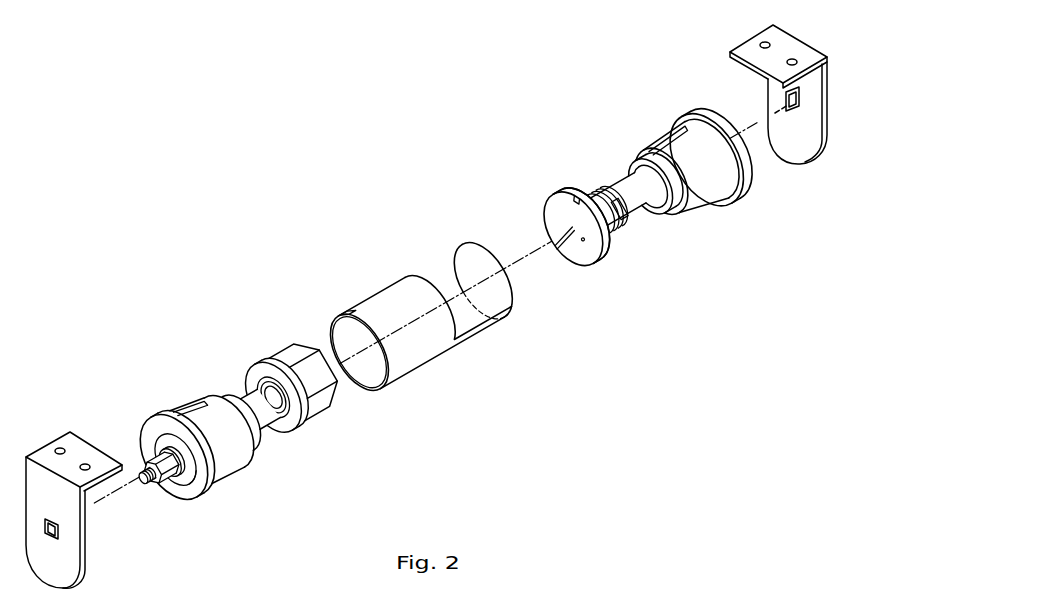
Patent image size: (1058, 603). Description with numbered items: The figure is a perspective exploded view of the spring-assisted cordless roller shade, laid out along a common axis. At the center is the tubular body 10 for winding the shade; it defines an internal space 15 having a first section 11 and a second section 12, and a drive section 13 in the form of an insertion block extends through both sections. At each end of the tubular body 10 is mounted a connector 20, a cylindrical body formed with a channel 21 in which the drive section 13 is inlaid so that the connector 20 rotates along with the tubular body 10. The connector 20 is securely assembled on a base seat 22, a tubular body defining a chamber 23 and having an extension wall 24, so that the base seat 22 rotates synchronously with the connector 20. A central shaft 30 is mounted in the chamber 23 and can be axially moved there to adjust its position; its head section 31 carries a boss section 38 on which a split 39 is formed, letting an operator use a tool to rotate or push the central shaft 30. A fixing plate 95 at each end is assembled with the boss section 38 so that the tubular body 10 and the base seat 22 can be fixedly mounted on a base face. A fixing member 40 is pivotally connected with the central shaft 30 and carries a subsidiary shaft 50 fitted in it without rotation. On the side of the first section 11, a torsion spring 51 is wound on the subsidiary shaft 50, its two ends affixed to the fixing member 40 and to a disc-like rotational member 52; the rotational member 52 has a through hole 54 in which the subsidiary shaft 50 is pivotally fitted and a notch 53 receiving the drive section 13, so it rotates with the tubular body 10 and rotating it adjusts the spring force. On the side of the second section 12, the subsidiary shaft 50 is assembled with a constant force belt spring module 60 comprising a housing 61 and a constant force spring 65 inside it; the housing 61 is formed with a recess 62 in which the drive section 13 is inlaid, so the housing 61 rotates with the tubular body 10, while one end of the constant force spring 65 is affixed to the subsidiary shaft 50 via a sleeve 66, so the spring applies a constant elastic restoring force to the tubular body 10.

The tubular body 10 is at (406, 315).
The first section 11 is at (497, 253).
The second section 12 is at (340, 330).
The drive section 13 is at (338, 335).
The internal space 15 is at (363, 389).
The connector 20 is at (220, 483).
The channel 21 is at (192, 418).
The base seat 22 is at (160, 418).
The chamber 23 is at (160, 437).
The extension wall 24 is at (245, 400).
The central shaft 30 is at (178, 500).
The head section 31 is at (187, 477).
The boss section 38 is at (172, 483).
The split 39 is at (147, 468).
The fixing member 40 is at (268, 433).
The subsidiary shaft 50 is at (580, 221).
The torsion spring 51 is at (613, 225).
The rotational member 52 is at (610, 247).
The notch 53 is at (580, 193).
The through hole 54 is at (551, 218).
The constant force belt spring module 60 is at (285, 382).
The housing 61 is at (315, 420).
The recess 62 is at (285, 367).
The constant force spring 65 is at (260, 372).
The sleeve 66 is at (295, 423).
The fixing plate 95 is at (76, 444).